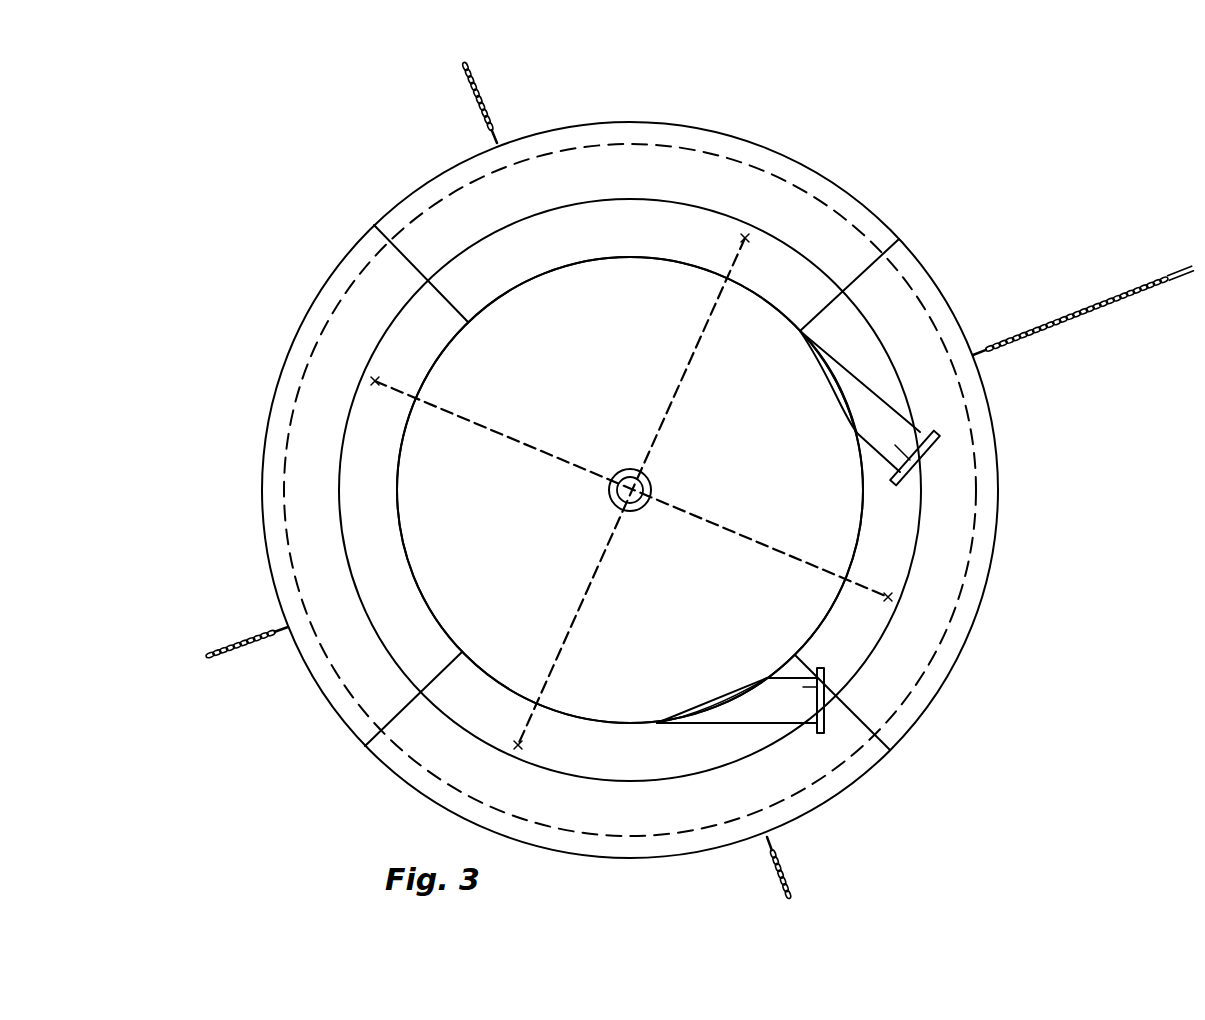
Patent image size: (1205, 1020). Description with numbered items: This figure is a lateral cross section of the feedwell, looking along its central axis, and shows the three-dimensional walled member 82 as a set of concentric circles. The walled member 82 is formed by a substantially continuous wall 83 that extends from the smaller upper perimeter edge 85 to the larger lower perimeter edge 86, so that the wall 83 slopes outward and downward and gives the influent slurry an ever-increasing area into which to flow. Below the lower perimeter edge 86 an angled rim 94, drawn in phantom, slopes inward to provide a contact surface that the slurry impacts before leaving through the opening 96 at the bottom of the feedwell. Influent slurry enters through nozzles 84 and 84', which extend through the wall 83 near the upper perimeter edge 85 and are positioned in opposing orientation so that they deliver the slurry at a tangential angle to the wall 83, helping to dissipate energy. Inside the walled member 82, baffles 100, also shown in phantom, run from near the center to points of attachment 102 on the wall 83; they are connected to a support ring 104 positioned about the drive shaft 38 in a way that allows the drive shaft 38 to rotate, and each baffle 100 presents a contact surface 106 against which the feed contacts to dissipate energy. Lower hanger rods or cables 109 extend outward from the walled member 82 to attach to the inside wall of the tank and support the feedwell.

The three-dimensional walled member 82 is at (280, 260).
The substantially continuous wall 83 is at (317, 550).
The nozzle 84 is at (785, 700).
The nozzle 84' is at (933, 408).
The upper perimeter edge 85 is at (425, 602).
The lower perimeter edge 86 is at (352, 727).
The angled rim 94 is at (288, 391).
The opening 96 is at (630, 490).
The drive shaft 38 is at (630, 490).
The baffle 100 is at (680, 385).
The point of attachment 102 is at (742, 238).
The support ring 104 is at (640, 511).
The contact surface 106 is at (686, 351).
The lower hanger rod or cable 109 is at (485, 106).